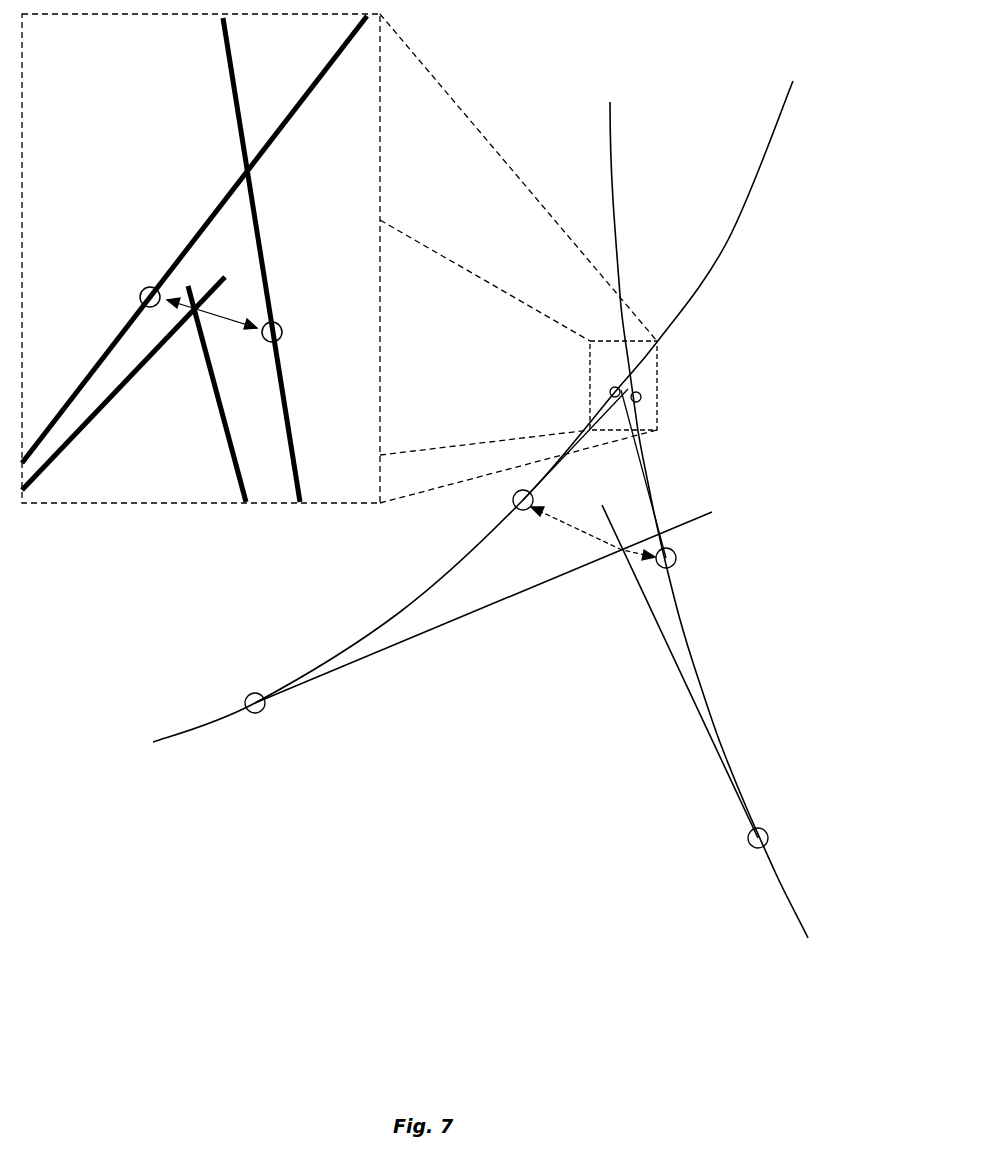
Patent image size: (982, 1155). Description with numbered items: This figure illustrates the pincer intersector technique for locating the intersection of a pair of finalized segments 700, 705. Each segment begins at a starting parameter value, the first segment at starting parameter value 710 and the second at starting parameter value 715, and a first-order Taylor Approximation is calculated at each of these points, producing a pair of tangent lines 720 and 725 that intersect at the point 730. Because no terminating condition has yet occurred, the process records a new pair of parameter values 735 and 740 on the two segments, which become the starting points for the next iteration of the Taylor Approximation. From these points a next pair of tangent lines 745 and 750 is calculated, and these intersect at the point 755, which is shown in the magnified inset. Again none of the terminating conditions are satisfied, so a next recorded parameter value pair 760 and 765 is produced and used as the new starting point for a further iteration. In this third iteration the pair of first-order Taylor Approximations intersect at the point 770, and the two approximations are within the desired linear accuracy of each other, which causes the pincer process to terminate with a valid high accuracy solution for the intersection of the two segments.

The finalized segment 700 is at (153, 742).
The finalized segment 705 is at (808, 938).
The starting parameter value 710 is at (255, 714).
The starting parameter value 715 is at (747, 838).
The tangent line 720 is at (428, 632).
The tangent line 725 is at (681, 682).
The intersection of tangent lines 730 is at (621, 555).
The recorded parameter value 735 is at (512, 503).
The recorded parameter value 740 is at (677, 558).
The tangent line 745 is at (67, 455).
The tangent line 750 is at (233, 468).
The intersection of tangent lines 755 is at (195, 314).
The recorded parameter value 760 is at (139, 297).
The recorded parameter value 765 is at (283, 332).
The intersection of Taylor Approximations 770 is at (245, 172).